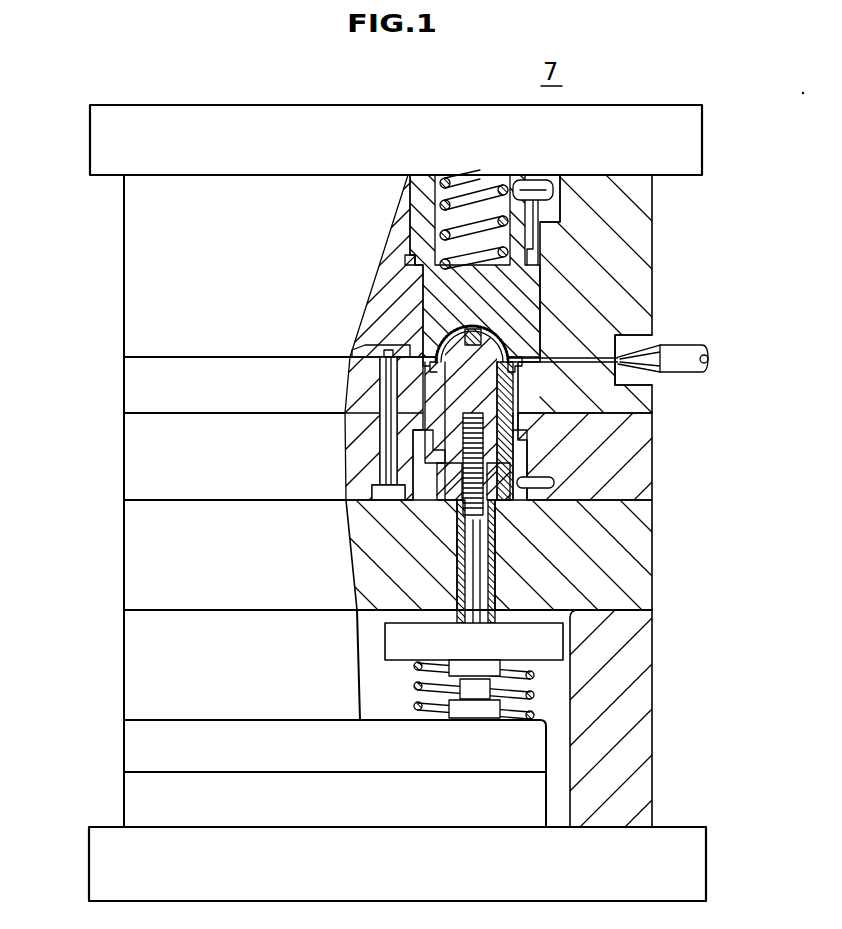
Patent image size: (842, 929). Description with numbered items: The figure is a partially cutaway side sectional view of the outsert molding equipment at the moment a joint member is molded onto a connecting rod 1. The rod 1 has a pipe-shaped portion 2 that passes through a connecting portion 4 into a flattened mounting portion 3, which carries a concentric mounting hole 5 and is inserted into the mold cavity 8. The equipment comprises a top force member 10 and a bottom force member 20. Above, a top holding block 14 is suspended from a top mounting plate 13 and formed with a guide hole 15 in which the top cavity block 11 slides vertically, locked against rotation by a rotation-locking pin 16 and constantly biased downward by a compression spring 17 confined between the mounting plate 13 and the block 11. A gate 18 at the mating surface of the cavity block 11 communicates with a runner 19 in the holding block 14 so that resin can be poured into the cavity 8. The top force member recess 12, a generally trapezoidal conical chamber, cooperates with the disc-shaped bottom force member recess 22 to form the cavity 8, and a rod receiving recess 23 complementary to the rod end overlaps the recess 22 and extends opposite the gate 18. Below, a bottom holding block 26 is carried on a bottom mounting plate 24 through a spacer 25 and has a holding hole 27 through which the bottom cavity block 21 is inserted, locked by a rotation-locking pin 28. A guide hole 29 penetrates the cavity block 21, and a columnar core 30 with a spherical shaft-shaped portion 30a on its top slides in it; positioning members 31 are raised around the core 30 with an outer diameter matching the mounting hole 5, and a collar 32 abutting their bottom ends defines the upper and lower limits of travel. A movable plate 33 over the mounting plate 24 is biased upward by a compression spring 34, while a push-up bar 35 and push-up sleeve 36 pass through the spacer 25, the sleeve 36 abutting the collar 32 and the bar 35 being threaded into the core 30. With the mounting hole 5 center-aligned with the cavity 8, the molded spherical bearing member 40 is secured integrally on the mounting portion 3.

The rod 1 is at (690, 346).
The pipe-shaped portion 2 is at (692, 373).
The mounting portion 3 is at (583, 358).
The connecting portion 4 is at (655, 352).
The mounting hole 5 is at (438, 380).
The cavity 8 is at (430, 312).
The top force member 10 is at (120, 270).
The cavity block 11 is at (428, 292).
The top force member recess 12 is at (520, 330).
The top mounting plate 13 is at (158, 116).
The top holding block 14 is at (140, 216).
The guide hole 15 is at (406, 258).
The rotation-locking pin 16 is at (546, 180).
The compression spring 17 is at (482, 180).
The gate 18 is at (427, 342).
The runner 19 is at (385, 383).
The bottom force member 20 is at (120, 468).
The cavity block 21 is at (446, 502).
The bottom force member recess 22 is at (532, 363).
The rod receiving recess 23 is at (582, 363).
The bottom mounting plate 24 is at (110, 834).
The spacer 25 is at (653, 600).
The bottom holding block 26 is at (653, 472).
The holding hole 27 is at (392, 492).
The rotation-locking pin 28 is at (552, 494).
The guide hole 29 is at (545, 482).
The core 30 is at (498, 440).
The spherical shaft-shaped portion 30a is at (443, 334).
The positioning members 31 is at (500, 416).
The collar 32 is at (490, 498).
The movable plate 33 is at (392, 645).
The compression spring 34 is at (417, 688).
The push-up bar 35 is at (478, 566).
The push-up sleeve 36 is at (496, 586).
The spherical bearing member 40 is at (505, 340).